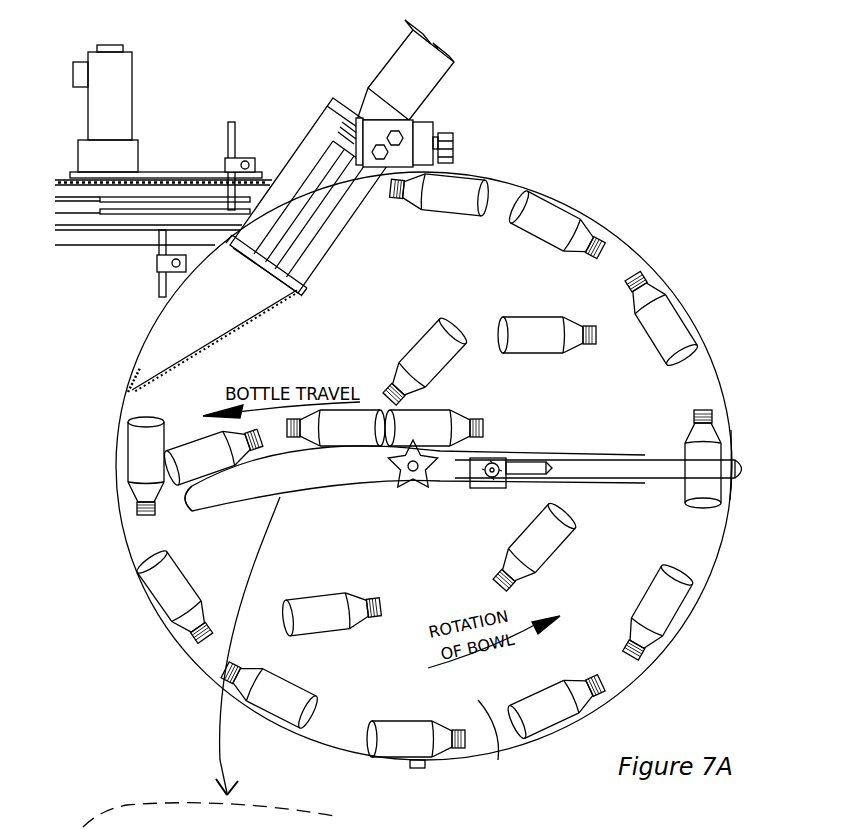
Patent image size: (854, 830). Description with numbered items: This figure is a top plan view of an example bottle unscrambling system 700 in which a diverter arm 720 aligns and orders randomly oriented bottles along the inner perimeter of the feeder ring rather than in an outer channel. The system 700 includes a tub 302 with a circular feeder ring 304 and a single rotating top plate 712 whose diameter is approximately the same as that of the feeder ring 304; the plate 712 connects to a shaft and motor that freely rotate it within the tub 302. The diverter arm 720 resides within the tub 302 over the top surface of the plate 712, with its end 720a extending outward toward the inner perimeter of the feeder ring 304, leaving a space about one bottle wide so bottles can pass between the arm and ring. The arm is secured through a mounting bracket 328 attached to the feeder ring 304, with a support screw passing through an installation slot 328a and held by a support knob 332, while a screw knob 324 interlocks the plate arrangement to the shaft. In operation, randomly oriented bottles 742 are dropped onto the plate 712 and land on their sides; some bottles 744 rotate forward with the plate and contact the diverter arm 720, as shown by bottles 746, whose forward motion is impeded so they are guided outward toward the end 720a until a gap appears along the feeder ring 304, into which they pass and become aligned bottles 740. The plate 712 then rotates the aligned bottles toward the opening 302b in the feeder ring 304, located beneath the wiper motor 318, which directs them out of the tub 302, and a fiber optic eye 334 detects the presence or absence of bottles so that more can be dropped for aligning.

The tub 302 is at (748, 415).
The opening 302b is at (287, 143).
The circular feeder ring 304 is at (725, 392).
The wiper motor 318 is at (328, 97).
The screw knob 324 is at (410, 489).
The mounting bracket 328 is at (660, 462).
The installation slot 328a is at (536, 460).
The support knob 332 is at (488, 490).
The fiber optic eye 334 is at (417, 768).
The bottle unscrambling system 700 is at (614, 170).
The rotating top plate 712 is at (497, 745).
The diverter arm 720 is at (358, 470).
The end of diverter arm 720a is at (185, 512).
The bottles 740 is at (610, 220).
The bottles 742 is at (495, 580).
The bottles 744 is at (408, 357).
The bottles 746 is at (300, 428).